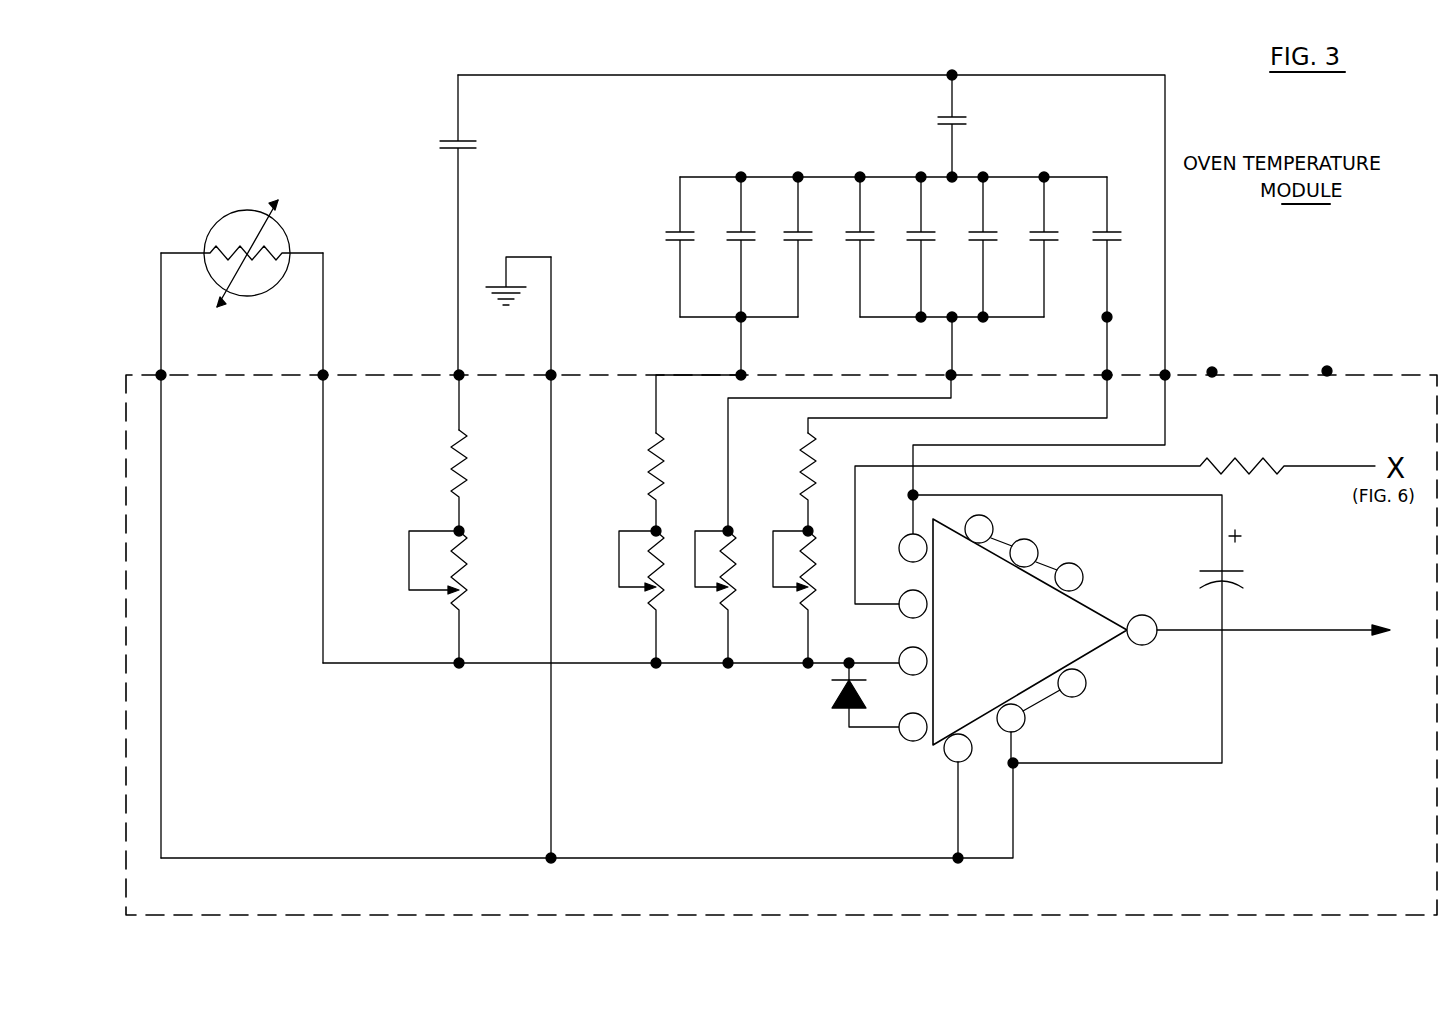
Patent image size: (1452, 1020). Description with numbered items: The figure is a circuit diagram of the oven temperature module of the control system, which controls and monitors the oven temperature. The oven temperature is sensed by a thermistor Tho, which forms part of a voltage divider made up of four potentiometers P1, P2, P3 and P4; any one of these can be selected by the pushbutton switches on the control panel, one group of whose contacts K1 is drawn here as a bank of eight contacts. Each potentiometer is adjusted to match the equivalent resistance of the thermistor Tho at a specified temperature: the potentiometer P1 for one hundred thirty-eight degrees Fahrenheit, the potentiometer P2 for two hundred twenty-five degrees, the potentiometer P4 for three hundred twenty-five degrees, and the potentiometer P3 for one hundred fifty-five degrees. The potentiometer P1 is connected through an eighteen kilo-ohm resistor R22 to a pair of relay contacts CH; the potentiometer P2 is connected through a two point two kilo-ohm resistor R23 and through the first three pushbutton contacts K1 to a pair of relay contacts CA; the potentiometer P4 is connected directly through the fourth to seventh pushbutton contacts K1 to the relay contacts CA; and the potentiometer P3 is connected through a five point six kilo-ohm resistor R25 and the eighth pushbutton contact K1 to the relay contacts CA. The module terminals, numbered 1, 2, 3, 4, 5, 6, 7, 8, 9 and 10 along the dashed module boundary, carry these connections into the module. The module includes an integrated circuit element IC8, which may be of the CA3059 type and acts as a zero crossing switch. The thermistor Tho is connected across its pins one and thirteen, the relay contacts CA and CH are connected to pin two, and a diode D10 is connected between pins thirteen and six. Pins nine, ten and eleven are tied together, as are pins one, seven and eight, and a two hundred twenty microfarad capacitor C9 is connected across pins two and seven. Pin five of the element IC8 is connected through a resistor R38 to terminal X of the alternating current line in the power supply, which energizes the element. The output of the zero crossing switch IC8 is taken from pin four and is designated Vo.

The thermistor Tho is at (236, 209).
The relay contacts CH is at (442, 141).
The relay contacts CA is at (966, 126).
The pushbutton switch contacts K1 is at (892, 247).
The module terminal 1 is at (166, 555).
The module terminal 2 is at (328, 458).
The module terminal 3 (138 F) 3 is at (466, 365).
The module terminal 4 is at (557, 560).
The module terminal 5 (225 F) 5 is at (735, 363).
The module terminal 6 (325 F) 6 is at (962, 363).
The module terminal 7 (155 F) 7 is at (1100, 362).
The module terminal 8 is at (1158, 386).
The module terminal 9 is at (1206, 384).
The module terminal 10 is at (1319, 384).
The resistor R22 is at (466, 456).
The resistor R23 is at (662, 456).
The resistor R25 is at (814, 456).
The resistor R38 is at (1226, 464).
The potentiometer P1 is at (466, 578).
The potentiometer P2 is at (653, 594).
The potentiometer P3 is at (807, 594).
The potentiometer P4 is at (728, 594).
The diode D10 is at (830, 698).
The integrated circuit element IC8 is at (1028, 686).
The capacitor C9 is at (1238, 568).
The output Vo is at (1300, 632).